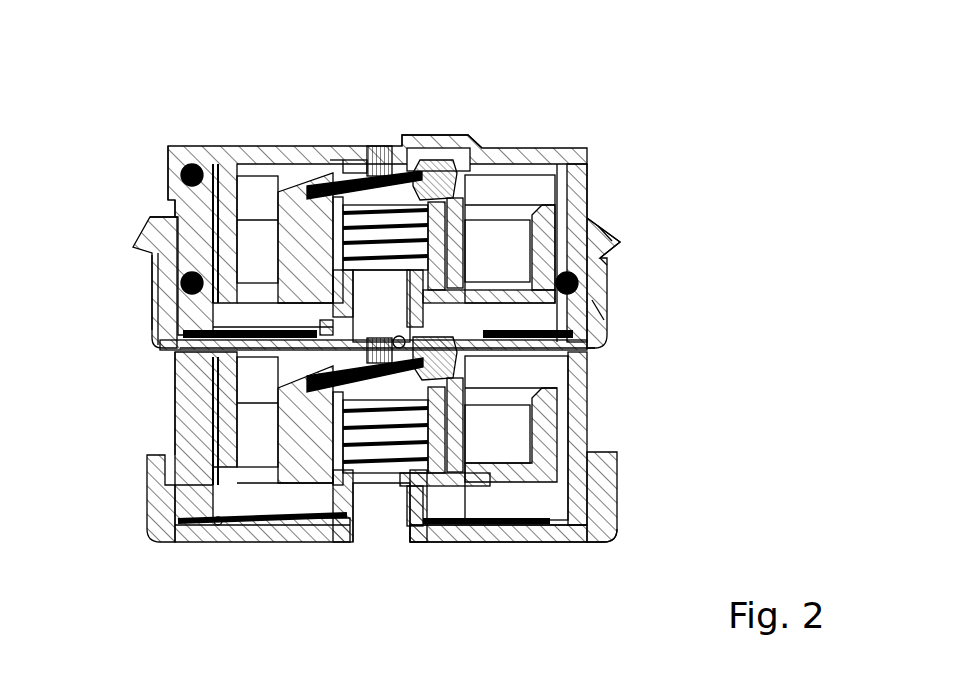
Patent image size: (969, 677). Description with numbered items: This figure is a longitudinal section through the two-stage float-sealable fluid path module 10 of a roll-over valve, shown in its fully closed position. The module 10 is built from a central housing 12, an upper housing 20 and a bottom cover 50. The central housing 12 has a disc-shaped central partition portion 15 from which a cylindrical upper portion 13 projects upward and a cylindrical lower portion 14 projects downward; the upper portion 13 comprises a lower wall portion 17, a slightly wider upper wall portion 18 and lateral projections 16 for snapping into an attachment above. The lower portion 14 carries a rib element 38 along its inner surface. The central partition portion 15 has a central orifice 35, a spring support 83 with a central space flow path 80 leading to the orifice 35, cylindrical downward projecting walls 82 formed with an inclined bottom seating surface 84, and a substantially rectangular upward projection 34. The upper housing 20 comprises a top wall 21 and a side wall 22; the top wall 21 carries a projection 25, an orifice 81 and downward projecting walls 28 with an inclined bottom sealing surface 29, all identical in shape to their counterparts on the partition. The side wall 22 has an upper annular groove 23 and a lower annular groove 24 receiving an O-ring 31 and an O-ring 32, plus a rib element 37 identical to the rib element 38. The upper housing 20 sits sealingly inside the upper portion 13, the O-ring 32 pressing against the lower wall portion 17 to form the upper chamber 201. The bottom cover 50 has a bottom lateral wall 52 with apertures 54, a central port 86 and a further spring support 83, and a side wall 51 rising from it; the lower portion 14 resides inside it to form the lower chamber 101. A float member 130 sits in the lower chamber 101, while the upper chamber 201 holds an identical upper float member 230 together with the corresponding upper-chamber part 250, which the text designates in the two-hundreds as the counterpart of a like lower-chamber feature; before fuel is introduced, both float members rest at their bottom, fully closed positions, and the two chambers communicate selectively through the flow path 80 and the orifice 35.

The float-sealable fluid path module 10 is at (647, 128).
The central housing 12 is at (611, 338).
The upper portion 13 is at (610, 288).
The lower portion 14 is at (587, 414).
The central partition portion 15 is at (180, 356).
The lateral projections 16 is at (624, 244).
The lower wall portion 17 is at (607, 318).
The upper wall portion 18 is at (610, 218).
The upper housing 20 is at (523, 160).
The top wall 21 is at (237, 171).
The side wall 22 is at (587, 197).
The upper annular groove 23 is at (212, 179).
The lower annular groove 24 is at (160, 283).
The projection 25 is at (470, 133).
The downward projecting walls 28 is at (362, 147).
The inclined bottom sealing surface 29 is at (400, 143).
The O-ring 31 is at (180, 168).
The O-ring 32 is at (160, 276).
The projection 34 is at (587, 353).
The orifice 35 is at (400, 380).
The rib element 37 is at (207, 164).
The rib element 38 is at (230, 528).
The bottom cover 50 is at (310, 551).
The side wall 51 is at (147, 508).
The bottom lateral wall 52 is at (468, 541).
The apertures 54 is at (213, 534).
The central space flow path 80 is at (262, 186).
The orifice 81 is at (385, 147).
The downward projecting walls 82 is at (400, 368).
The spring support 83 is at (150, 229).
The inclined bottom seating surface 84 is at (497, 444).
The central port 86 is at (383, 526).
The lower chamber 101 is at (515, 536).
The float member 130 is at (619, 526).
The upper chamber 201 is at (524, 196).
The upper float member 230 is at (613, 264).
The spring guide strip 250 is at (330, 147).